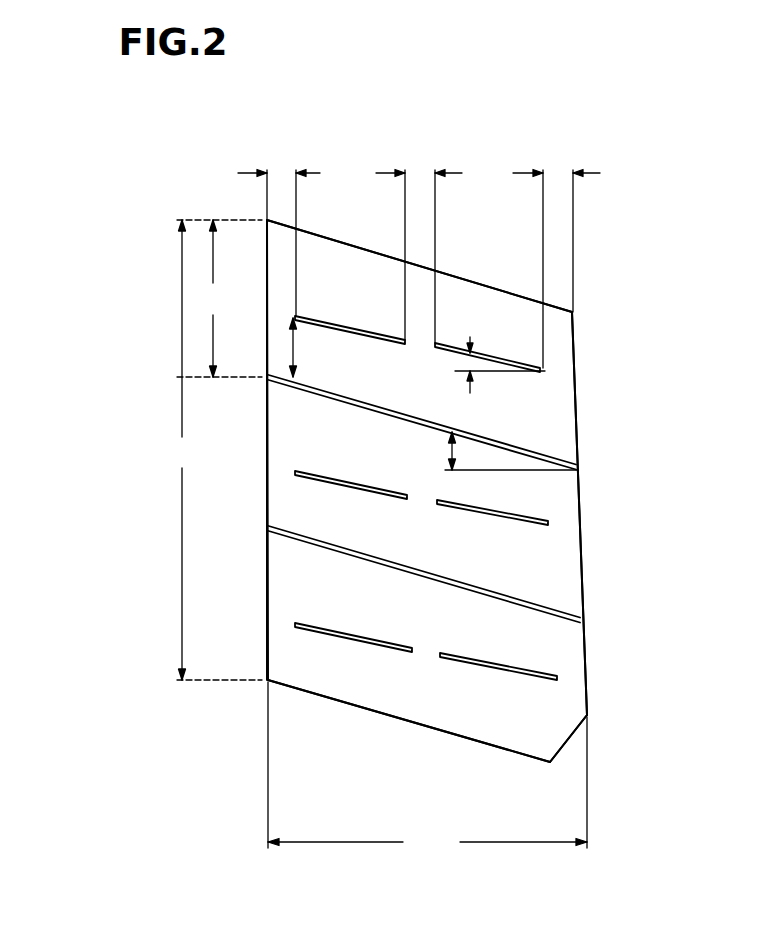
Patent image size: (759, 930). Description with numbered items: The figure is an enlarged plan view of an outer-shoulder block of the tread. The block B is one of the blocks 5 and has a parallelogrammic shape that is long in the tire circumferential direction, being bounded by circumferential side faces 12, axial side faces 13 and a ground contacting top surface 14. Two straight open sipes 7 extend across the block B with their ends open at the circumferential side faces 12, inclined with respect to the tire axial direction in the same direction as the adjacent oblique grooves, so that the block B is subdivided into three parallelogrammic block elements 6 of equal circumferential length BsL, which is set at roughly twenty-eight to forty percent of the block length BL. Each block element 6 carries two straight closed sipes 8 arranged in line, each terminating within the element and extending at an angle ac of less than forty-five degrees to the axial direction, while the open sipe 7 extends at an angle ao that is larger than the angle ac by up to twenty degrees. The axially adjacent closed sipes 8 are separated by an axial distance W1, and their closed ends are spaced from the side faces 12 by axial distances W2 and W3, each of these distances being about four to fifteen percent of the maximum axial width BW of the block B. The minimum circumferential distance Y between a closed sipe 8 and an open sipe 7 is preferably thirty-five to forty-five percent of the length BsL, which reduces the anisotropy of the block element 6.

The block 5 is at (580, 363).
The block element 6 is at (545, 400).
The open sipe 7 is at (522, 447).
The closed sipe 8 is at (364, 333).
The circumferential side face 12 is at (267, 490).
The axial side face 13 is at (330, 239).
The ground contacting top surface 14 is at (567, 660).
The block B is at (255, 276).
The axial distance between adjacent closed sipes W1 is at (419, 244).
The axial distance from closed sipe end to side face W2 is at (279, 231).
The axial distance from closed sipe end to side face W3 is at (556, 257).
The circumferential length of block element BsL is at (219, 298).
The length of the block BL is at (213, 450).
The maximum axial width of the block BW is at (427, 769).
The minimum circumferential distance between closed sipe and open sipe Y is at (303, 347).
The angle of the closed sipe ac is at (489, 365).
The angle of the open sipe ao is at (495, 451).